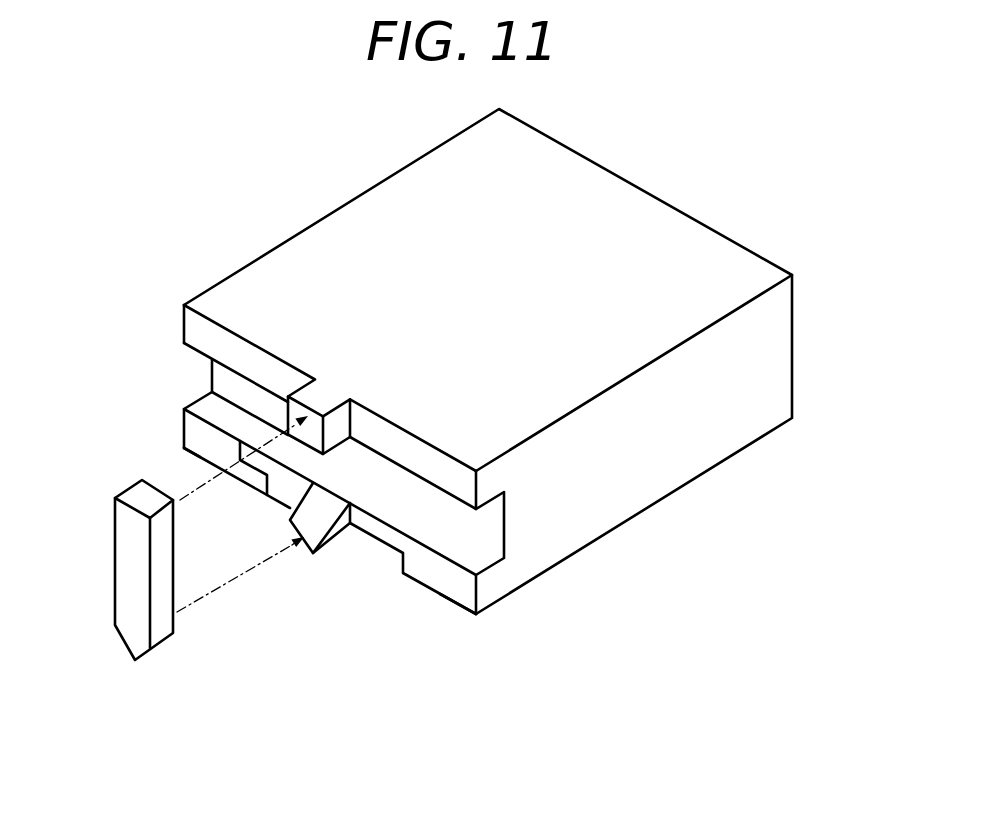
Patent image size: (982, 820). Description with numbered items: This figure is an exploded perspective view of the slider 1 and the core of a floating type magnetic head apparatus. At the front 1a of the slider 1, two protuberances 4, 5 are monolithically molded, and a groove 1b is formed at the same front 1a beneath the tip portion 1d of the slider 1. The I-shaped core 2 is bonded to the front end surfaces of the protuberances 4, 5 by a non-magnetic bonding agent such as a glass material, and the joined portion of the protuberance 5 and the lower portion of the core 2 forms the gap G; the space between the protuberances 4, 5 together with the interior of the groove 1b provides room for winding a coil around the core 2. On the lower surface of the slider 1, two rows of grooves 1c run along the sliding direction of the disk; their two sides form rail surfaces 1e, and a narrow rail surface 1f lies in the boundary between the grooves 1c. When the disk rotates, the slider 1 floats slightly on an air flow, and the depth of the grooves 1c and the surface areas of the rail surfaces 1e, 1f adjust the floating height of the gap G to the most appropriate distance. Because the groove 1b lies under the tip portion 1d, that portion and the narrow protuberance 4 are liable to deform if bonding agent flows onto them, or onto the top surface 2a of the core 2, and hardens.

The slider 1 is at (445, 402).
The front of the slider 1a is at (427, 466).
The groove 1b is at (492, 522).
The grooves 1c is at (283, 495).
The tip portion of the slider 1d is at (272, 318).
The rail surfaces 1e is at (190, 460).
The narrow rail surface 1f is at (343, 538).
The I-shaped core 2 is at (98, 545).
The top surface of the I-shaped core 2a is at (143, 492).
The protuberance 4 is at (317, 397).
The protuberance 5 is at (300, 552).
The gap G is at (241, 582).